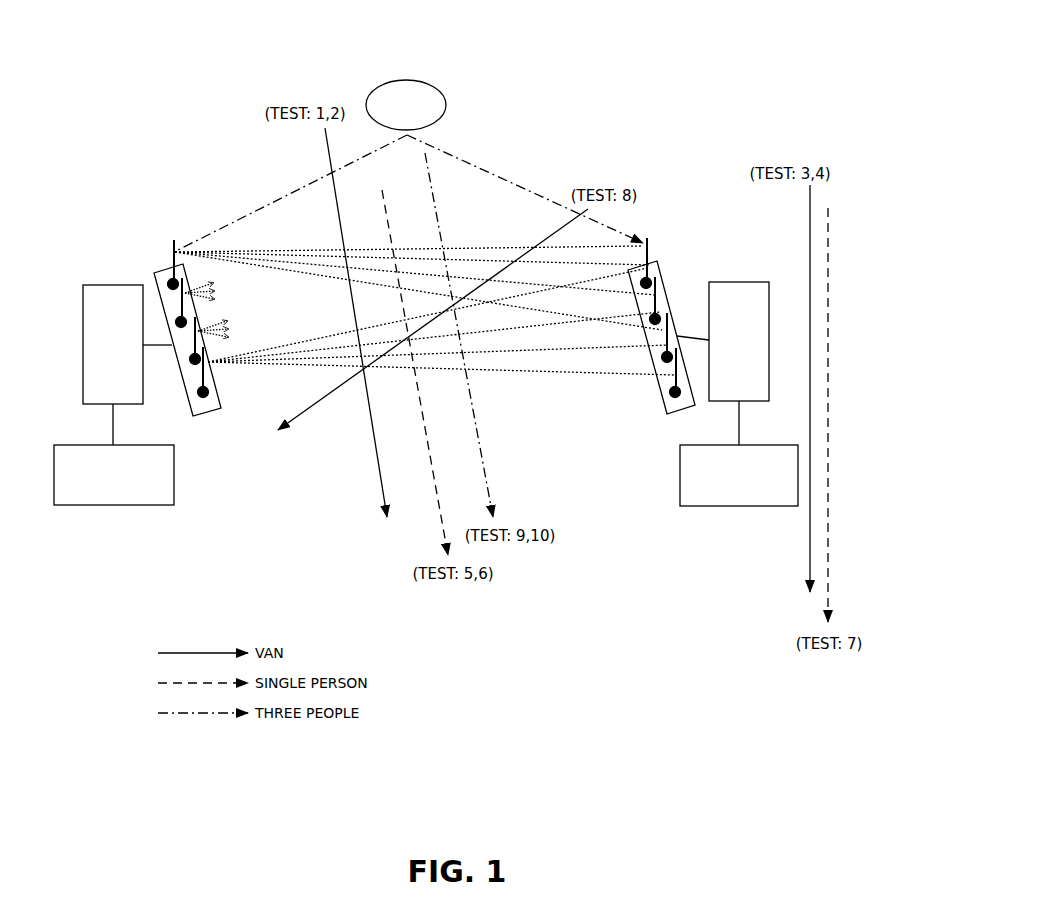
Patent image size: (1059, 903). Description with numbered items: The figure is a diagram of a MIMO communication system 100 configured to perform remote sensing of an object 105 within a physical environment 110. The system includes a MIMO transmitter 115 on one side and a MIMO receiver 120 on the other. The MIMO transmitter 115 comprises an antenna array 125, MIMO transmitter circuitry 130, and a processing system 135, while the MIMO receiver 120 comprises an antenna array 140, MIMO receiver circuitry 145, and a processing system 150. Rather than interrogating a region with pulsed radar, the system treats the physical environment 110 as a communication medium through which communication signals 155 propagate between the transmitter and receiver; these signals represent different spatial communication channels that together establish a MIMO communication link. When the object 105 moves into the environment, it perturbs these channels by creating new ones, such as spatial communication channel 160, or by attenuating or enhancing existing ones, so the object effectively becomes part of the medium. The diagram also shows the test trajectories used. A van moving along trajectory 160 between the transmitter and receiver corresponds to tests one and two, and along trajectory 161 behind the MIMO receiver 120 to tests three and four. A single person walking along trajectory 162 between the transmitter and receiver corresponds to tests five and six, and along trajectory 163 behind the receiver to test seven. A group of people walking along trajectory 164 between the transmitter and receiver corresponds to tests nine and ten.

The MIMO communication system 100 is at (722, 43).
The object 105 is at (406, 105).
The physical environment 110 is at (195, 146).
The MIMO transmitter 115 is at (140, 227).
The MIMO receiver 120 is at (645, 455).
The antenna array 125 is at (210, 412).
The MIMO transmitter circuitry 130 is at (127, 344).
The processing system 135 is at (114, 454).
The antenna array 140 is at (660, 268).
The MIMO receiver circuitry 145 is at (723, 341).
The processing system 150 is at (739, 453).
The communication signals 155 is at (253, 252).
The trajectory 160 is at (485, 168).
The trajectory 161 is at (810, 210).
The trajectory 162 is at (438, 508).
The trajectory 163 is at (828, 593).
The trajectory 164 is at (487, 497).